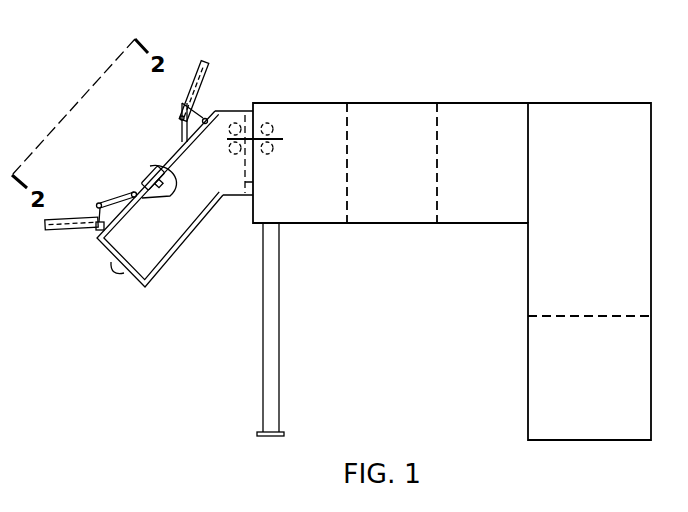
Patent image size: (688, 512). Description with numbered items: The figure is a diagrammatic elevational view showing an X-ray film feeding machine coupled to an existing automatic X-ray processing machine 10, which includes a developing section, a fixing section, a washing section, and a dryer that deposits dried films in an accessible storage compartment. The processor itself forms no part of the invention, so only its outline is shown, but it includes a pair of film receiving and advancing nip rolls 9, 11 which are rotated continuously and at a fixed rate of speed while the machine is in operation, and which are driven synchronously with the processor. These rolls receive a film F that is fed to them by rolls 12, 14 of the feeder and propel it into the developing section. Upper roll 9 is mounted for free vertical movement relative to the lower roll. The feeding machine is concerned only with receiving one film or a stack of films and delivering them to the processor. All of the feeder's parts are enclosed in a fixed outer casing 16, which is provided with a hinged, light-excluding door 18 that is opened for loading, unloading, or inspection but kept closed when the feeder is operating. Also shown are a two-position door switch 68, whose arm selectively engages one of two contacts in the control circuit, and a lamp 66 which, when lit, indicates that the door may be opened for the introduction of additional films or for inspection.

The upper nip roll 9 is at (268, 122).
The automatic X-ray processing machine 10 is at (483, 103).
The lower nip roll 11 is at (273, 153).
The feeder roll 12 is at (236, 122).
The feeder roll 14 is at (231, 153).
The fixed outer casing 16 is at (176, 259).
The light-excluding door 18 is at (189, 62).
The lamp 66 is at (108, 281).
The door switch 68 is at (141, 169).
The film F is at (285, 139).